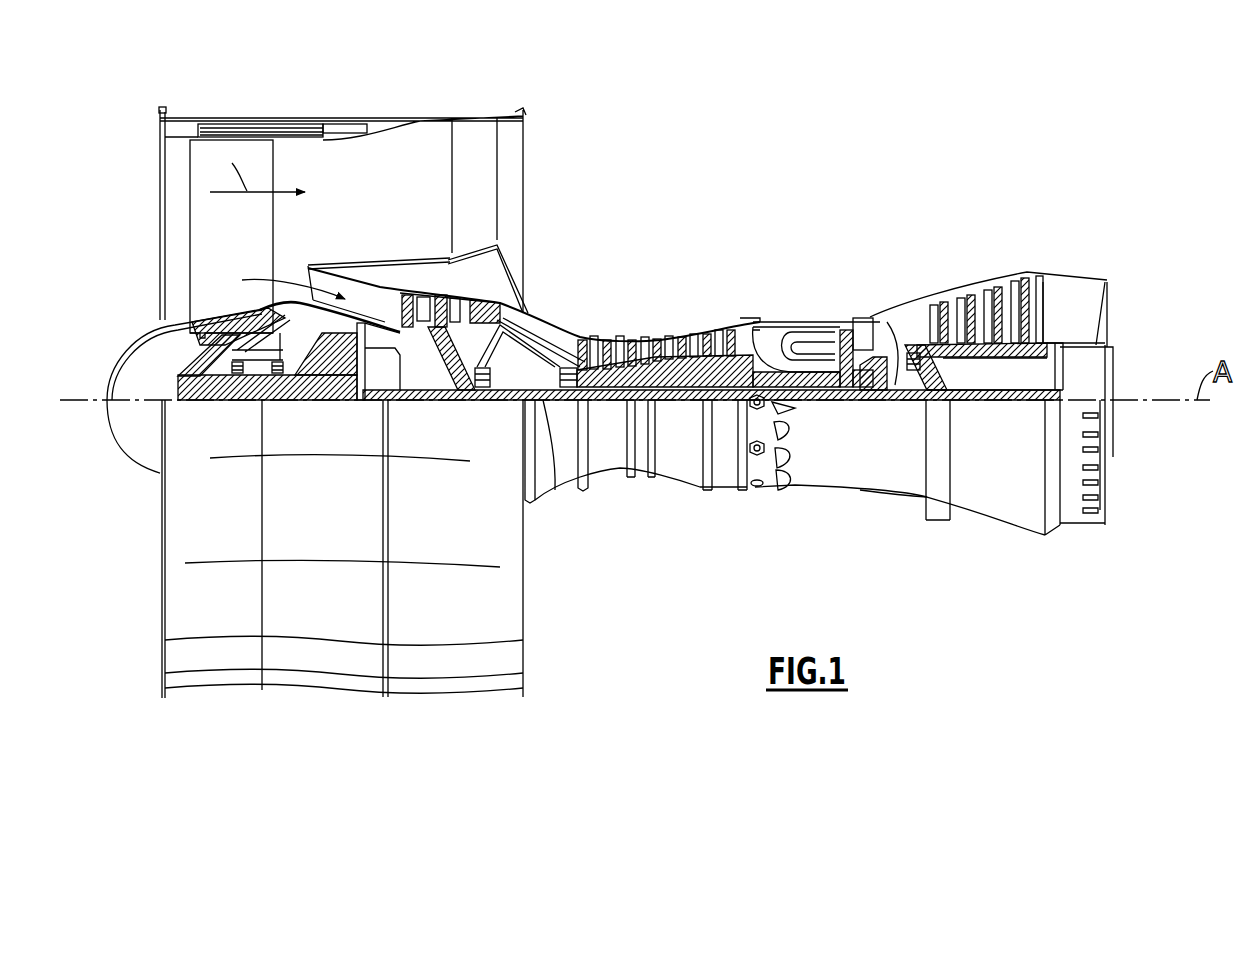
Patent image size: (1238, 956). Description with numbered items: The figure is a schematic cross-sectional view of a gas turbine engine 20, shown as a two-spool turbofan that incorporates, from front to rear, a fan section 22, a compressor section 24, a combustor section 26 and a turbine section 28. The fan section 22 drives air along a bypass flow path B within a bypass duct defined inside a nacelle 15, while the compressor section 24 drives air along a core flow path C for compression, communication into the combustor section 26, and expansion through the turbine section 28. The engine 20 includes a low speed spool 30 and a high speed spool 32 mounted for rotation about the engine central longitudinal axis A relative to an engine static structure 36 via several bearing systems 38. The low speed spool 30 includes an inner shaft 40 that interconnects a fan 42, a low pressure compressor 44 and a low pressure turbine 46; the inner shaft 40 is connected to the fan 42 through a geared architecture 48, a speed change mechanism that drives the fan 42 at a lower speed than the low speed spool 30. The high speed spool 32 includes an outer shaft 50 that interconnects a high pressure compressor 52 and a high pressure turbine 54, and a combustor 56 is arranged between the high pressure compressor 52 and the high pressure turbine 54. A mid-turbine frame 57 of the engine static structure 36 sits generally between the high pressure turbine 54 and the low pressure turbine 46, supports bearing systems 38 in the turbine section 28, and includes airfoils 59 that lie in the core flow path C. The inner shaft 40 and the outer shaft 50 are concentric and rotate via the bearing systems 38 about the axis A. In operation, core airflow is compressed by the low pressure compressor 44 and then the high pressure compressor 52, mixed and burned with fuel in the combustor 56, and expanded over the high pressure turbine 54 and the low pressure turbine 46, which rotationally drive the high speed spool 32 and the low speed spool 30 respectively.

The gas turbine engine 20 is at (802, 168).
The fan section 22 is at (273, 108).
The nacelle 15 is at (347, 120).
The fan 42 is at (246, 246).
The geared architecture 48 is at (350, 383).
The low pressure compressor 44 is at (443, 310).
The bearing systems 38 is at (483, 392).
The compressor section 24 is at (575, 305).
The high pressure compressor 52 is at (653, 337).
The high speed spool 32 is at (727, 327).
The combustor section 26 is at (797, 295).
The combustor 56 is at (803, 337).
The high pressure turbine 54 is at (860, 317).
The mid-turbine frame 57 is at (907, 303).
The turbine section 28 is at (943, 260).
The low pressure turbine 46 is at (992, 283).
The airfoils 59 is at (922, 355).
The low speed spool 30 is at (682, 405).
The engine static structure 36 is at (722, 490).
The inner shaft 40 is at (550, 467).
The outer shaft 50 is at (797, 383).